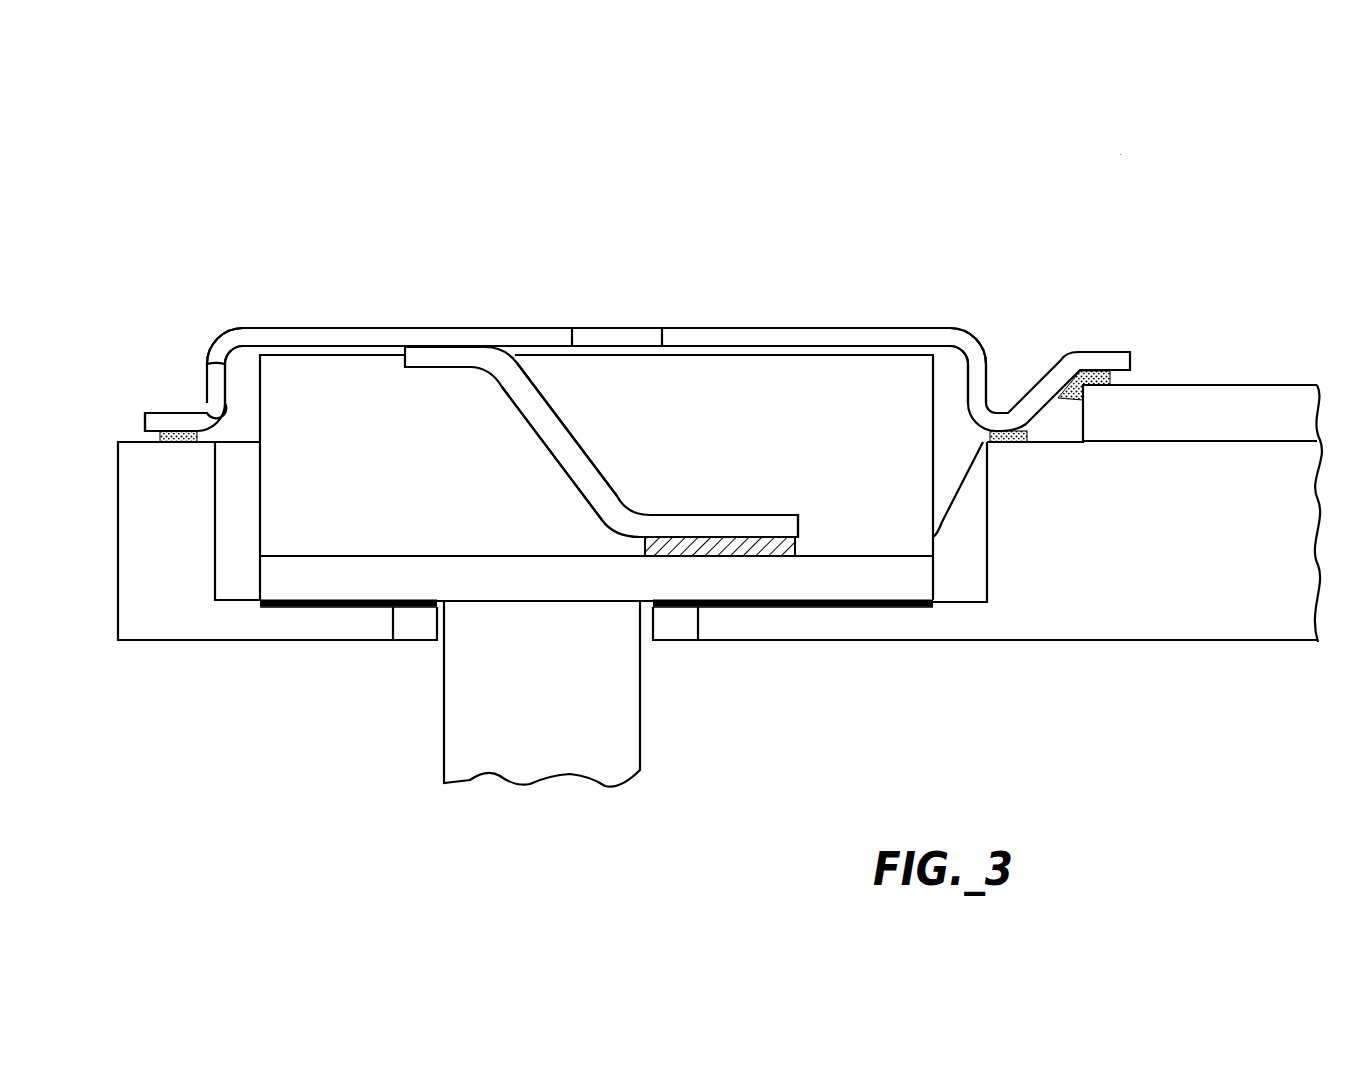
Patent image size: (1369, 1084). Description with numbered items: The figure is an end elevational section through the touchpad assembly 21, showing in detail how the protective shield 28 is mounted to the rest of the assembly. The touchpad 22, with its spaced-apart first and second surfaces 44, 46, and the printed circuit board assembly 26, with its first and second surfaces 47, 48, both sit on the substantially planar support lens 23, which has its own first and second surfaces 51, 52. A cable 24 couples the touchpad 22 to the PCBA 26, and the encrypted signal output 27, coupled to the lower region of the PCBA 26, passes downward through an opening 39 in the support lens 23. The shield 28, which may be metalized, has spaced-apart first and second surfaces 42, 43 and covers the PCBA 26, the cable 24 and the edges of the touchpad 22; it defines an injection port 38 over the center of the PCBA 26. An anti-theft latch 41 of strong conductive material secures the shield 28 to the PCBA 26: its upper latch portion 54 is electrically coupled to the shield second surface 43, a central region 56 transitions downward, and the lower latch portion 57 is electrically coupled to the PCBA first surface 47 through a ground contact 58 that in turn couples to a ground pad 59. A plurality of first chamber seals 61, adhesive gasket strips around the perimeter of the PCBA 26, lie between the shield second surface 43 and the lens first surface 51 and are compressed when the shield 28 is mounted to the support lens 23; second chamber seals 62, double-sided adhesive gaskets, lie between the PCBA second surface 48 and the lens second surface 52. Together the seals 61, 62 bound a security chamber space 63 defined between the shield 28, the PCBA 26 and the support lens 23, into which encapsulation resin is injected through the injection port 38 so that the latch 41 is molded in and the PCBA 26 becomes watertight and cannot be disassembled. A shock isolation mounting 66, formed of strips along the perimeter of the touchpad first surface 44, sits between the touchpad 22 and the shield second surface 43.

The touchpad assembly 21 is at (1121, 153).
The touchpad 22 is at (1293, 378).
The support lens 23 is at (177, 643).
The cable 24 is at (970, 490).
The printed circuit board assembly 26 is at (358, 582).
The encrypted signal output 27 is at (648, 727).
The protective shield 28 is at (773, 325).
The injection port 38 is at (605, 325).
The opening 39 is at (440, 633).
The anti-theft latch 41 is at (584, 442).
The shield first surface 42 is at (327, 327).
The shield second surface 43 is at (330, 355).
The touchpad first surface 44 is at (1209, 383).
The touchpad second surface 46 is at (1209, 443).
The PCBA first surface 47 is at (392, 555).
The PCBA second surface 48 is at (393, 610).
The lens first surface 51 is at (132, 440).
The lens second surface 52 is at (298, 600).
The upper latch portion 54 is at (448, 370).
The central region 56 is at (552, 458).
The lower latch portion 57 is at (712, 512).
The ground contact 58 is at (760, 558).
The ground pad 59 is at (788, 558).
The first chamber seals 61 is at (178, 428).
The second chamber seals 62 is at (280, 609).
The security chamber space 63 is at (243, 383).
The shock isolation mounting 66 is at (1095, 362).